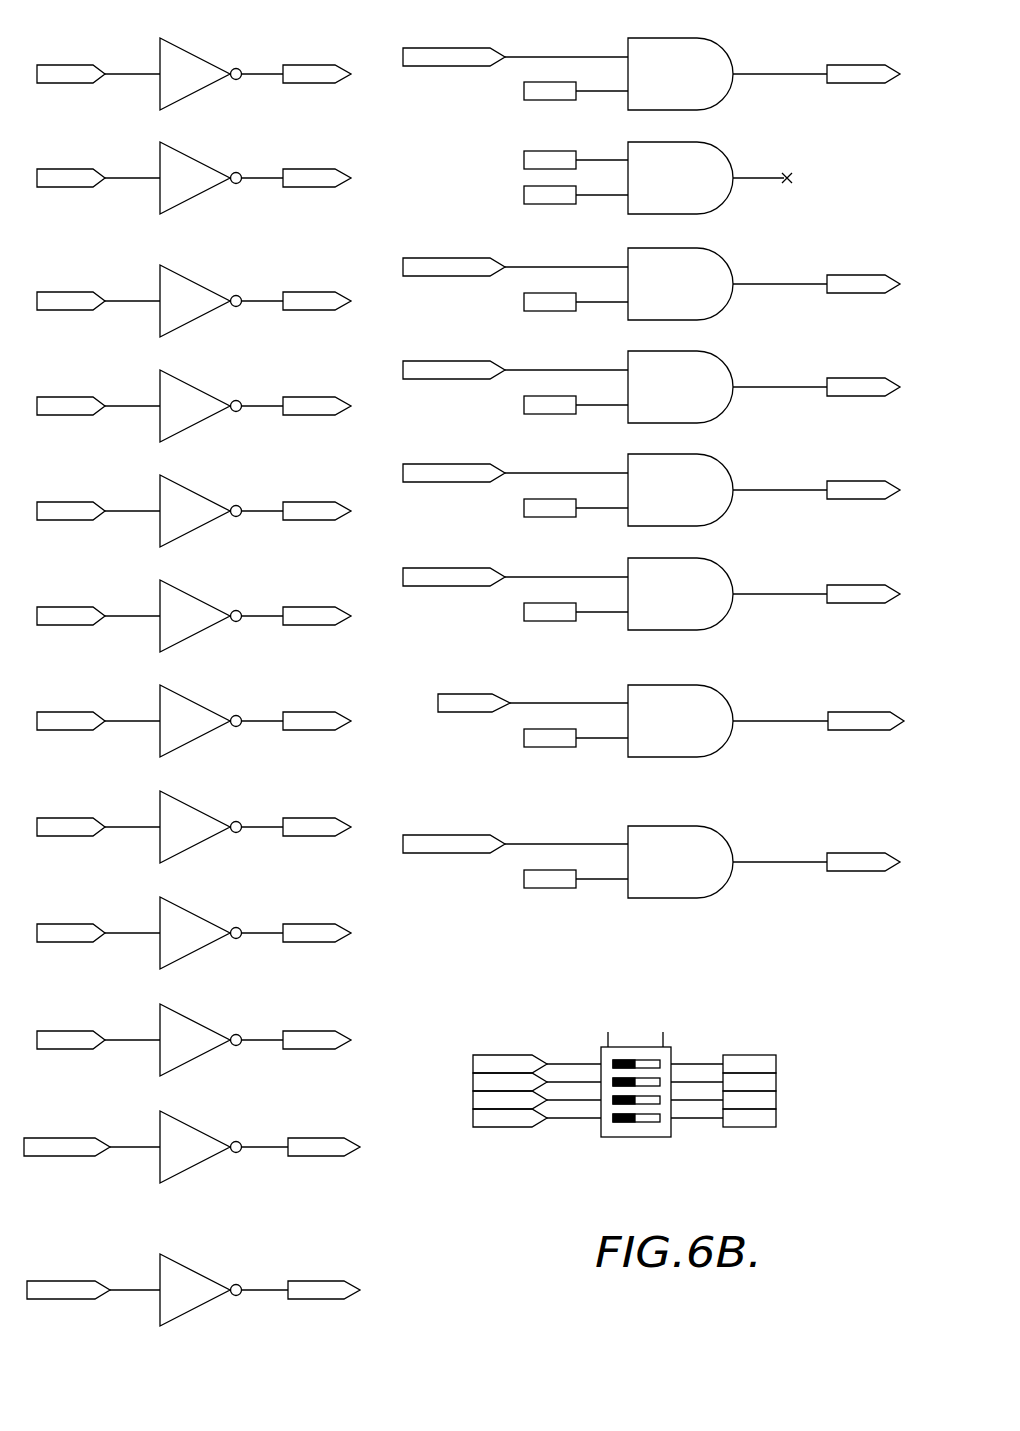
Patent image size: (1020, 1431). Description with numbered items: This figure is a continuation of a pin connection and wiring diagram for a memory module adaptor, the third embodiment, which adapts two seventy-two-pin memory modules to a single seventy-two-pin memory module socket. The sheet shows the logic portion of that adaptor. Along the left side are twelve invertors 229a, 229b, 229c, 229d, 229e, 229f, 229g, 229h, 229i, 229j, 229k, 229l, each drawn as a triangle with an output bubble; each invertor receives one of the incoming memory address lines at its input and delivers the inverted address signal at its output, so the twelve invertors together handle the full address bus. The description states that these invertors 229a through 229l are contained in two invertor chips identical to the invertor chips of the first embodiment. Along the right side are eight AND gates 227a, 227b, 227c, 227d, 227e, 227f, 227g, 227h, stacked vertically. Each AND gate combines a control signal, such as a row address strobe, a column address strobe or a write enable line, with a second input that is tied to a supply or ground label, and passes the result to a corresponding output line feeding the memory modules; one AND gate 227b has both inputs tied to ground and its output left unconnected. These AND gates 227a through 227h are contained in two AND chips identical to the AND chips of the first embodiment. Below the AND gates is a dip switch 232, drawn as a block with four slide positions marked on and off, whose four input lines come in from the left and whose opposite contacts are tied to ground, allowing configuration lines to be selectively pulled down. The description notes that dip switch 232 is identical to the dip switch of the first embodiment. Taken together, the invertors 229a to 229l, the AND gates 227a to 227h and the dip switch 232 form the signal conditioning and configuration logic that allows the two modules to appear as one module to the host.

The invertor 229a is at (190, 62).
The invertor 229b is at (177, 158).
The invertor 229c is at (186, 285).
The invertor 229d is at (190, 390).
The invertor 229e is at (190, 497).
The invertor 229f is at (192, 600).
The invertor 229g is at (195, 708).
The invertor 229h is at (188, 805).
The invertor 229i is at (203, 924).
The invertor 229j is at (190, 1025).
The invertor 229k is at (188, 1130).
The invertor 229l is at (180, 1270).
The AND gate 227a is at (720, 58).
The AND gate 227b is at (705, 155).
The AND gate 227c is at (712, 268).
The AND gate 227d is at (712, 372).
The AND gate 227e is at (712, 474).
The AND gate 227f is at (712, 578).
The AND gate 227g is at (712, 705).
The AND gate 227h is at (712, 845).
The dip switch 232 is at (625, 1130).